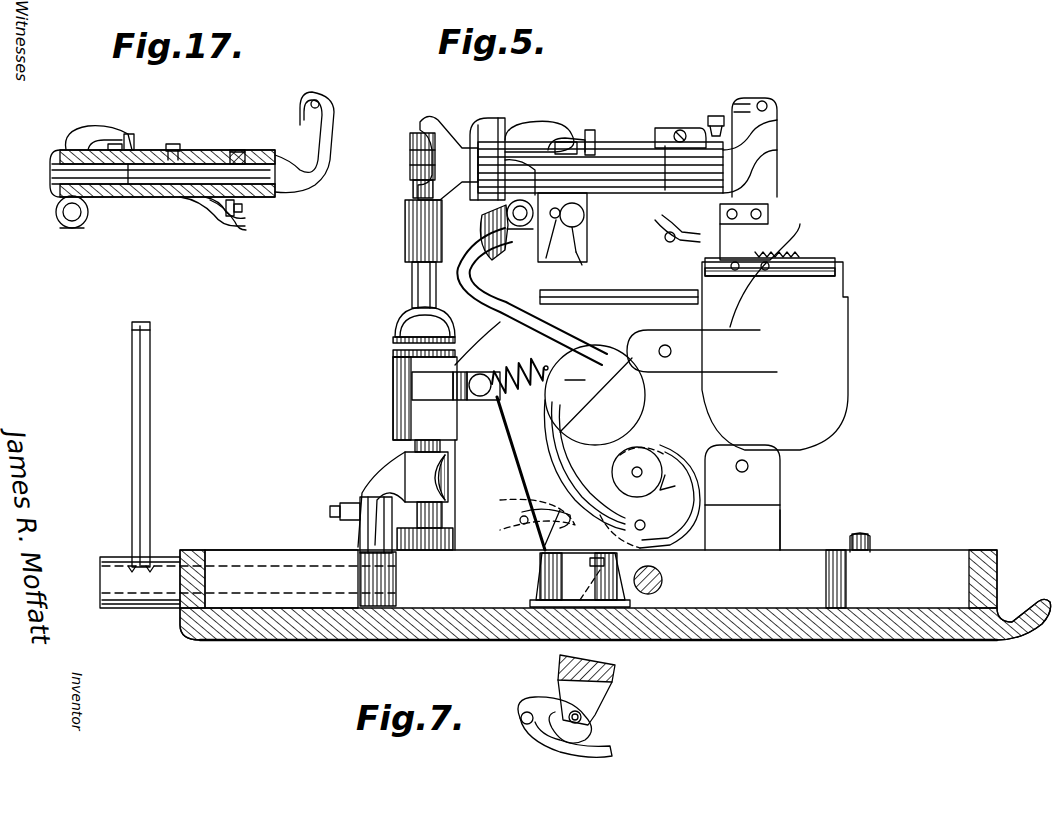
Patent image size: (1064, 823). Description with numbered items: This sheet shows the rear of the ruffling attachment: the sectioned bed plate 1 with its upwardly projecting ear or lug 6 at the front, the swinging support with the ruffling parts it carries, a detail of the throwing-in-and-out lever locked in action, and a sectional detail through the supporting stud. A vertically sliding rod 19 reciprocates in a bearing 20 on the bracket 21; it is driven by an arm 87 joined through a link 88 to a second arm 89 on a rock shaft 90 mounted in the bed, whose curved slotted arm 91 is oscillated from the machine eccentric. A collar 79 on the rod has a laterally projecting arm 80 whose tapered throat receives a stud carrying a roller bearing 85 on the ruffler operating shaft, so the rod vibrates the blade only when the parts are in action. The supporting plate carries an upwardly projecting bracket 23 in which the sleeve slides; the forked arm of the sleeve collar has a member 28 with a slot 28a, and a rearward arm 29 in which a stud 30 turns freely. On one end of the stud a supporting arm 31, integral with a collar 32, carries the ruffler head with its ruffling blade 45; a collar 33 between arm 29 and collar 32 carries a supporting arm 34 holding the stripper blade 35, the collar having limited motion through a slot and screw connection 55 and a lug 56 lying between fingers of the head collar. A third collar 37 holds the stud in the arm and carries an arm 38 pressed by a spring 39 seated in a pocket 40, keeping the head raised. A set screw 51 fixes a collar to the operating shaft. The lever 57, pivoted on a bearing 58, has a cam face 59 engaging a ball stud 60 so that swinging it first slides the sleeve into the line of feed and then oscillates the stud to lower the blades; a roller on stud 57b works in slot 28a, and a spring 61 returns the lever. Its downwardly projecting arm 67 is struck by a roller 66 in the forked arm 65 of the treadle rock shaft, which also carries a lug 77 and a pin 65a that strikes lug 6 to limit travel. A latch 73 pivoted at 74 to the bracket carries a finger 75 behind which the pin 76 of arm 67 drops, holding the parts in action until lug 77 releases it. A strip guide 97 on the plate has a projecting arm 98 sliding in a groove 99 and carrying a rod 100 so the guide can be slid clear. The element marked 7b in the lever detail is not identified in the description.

In FIG. 5, the bed plate 1 is at (778, 616).
In FIG. 5, the ear or lug 6 is at (765, 540).
In FIG. 7, the ring arm 7b is at (612, 751).
In FIG. 5, the vertically sliding rod 19 is at (412, 282).
In FIG. 5, the bearing 20 is at (430, 373).
In FIG. 5, the bracket 21 is at (446, 495).
In FIG. 5, the bracket 23 is at (584, 227).
In FIG. 5, the member 28 is at (578, 240).
In FIG. 5, the slot 28a is at (591, 270).
In FIG. 17, the arm 29 is at (132, 134).
In FIG. 5, the arm 29 is at (595, 140).
In FIG. 17, the stud 30 is at (127, 186).
In FIG. 17, the supporting arm 31 is at (318, 176).
In FIG. 5, the supporting arm 31 is at (777, 170).
In FIG. 17, the collar 32 is at (221, 148).
In FIG. 5, the collar 32 is at (679, 168).
In FIG. 17, the collar 33 is at (177, 198).
In FIG. 5, the collar 33 is at (600, 167).
In FIG. 17, the supporting arm 34 is at (224, 225).
In FIG. 5, the supporting arm 34 is at (668, 246).
In FIG. 5, the stripper blade 35 is at (756, 262).
In FIG. 5, the third collar 37 is at (505, 150).
In FIG. 5, the arm 38 is at (548, 128).
In FIG. 17, the spring 39 is at (110, 145).
In FIG. 5, the spring 39 is at (572, 146).
In FIG. 5, the pocket 40 is at (535, 176).
In FIG. 5, the ruffling blade 45 is at (800, 216).
In FIG. 5, the set screw 51 is at (715, 114).
In FIG. 17, the slot and screw connection 55 is at (173, 144).
In FIG. 17, the lug 56 is at (242, 208).
In FIG. 5, the lug 56 is at (700, 206).
In FIG. 17, the lever 57 is at (242, 224).
In FIG. 5, the lever 57 is at (531, 296).
In FIG. 5, the stud 57b is at (551, 248).
In FIG. 5, the bearing 58 is at (612, 418).
In FIG. 5, the cam face 59 is at (490, 225).
In FIG. 17, the ball stud 60 is at (55, 222).
In FIG. 5, the ball stud 60 is at (507, 206).
In FIG. 5, the spring 61 is at (521, 395).
In FIG. 5, the arm 65 is at (672, 470).
In FIG. 5, the pin 65a is at (705, 505).
In FIG. 5, the roller 66 is at (640, 455).
In FIG. 5, the arm 67 is at (580, 470).
In FIG. 7, the arm 67 is at (595, 675).
In FIG. 5, the latch 73 is at (530, 530).
In FIG. 5, the pivot 74 is at (520, 521).
In FIG. 5, the finger 75 is at (545, 545).
In FIG. 7, the finger 75 is at (578, 722).
In FIG. 5, the pin 76 is at (645, 525).
In FIG. 7, the pin 76 is at (582, 717).
In FIG. 5, the lug 77 is at (565, 607).
In FIG. 5, the collar 79 is at (405, 238).
In FIG. 5, the arm 80 is at (448, 158).
In FIG. 5, the roller bearing 85 is at (408, 166).
In FIG. 5, the arm 87 is at (392, 462).
In FIG. 5, the link 88 is at (358, 526).
In FIG. 5, the second arm 89 is at (396, 580).
In FIG. 5, the rock shaft 90 is at (238, 560).
In FIG. 5, the curved slotted arm 91 is at (150, 444).
In FIG. 5, the strip guide 97 is at (775, 356).
In FIG. 5, the projecting arm 98 is at (702, 351).
In FIG. 5, the groove 99 is at (625, 305).
In FIG. 5, the rod 100 is at (588, 371).